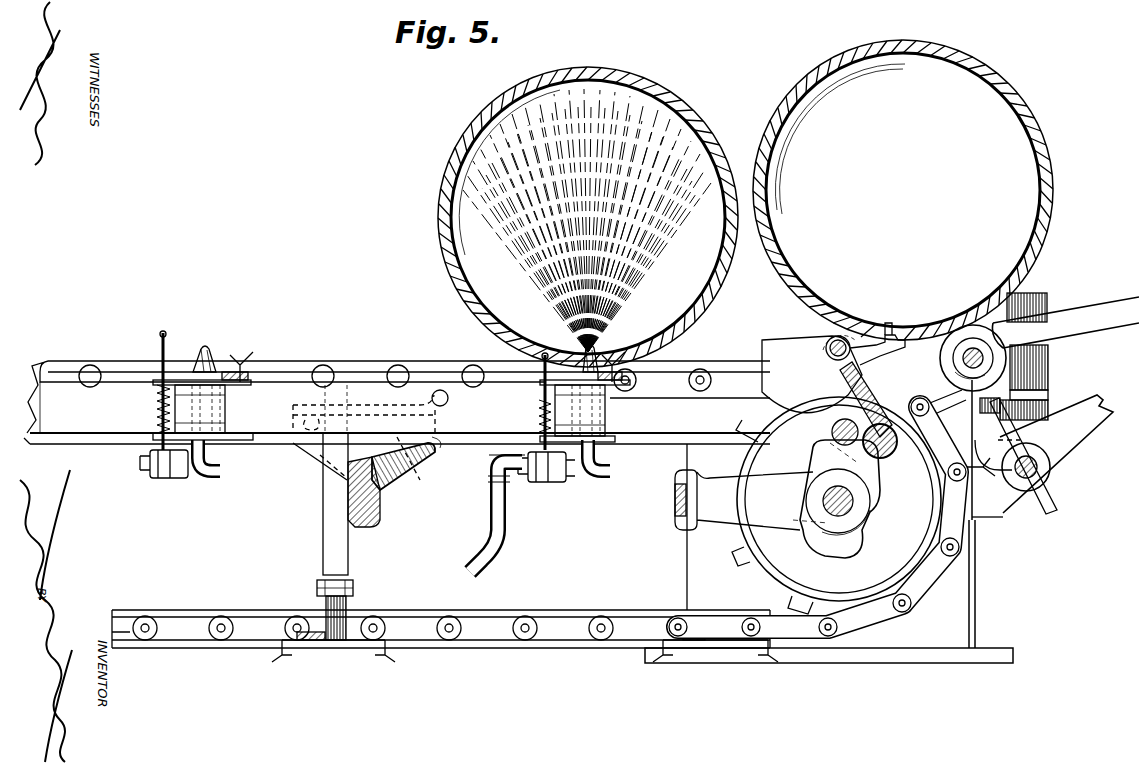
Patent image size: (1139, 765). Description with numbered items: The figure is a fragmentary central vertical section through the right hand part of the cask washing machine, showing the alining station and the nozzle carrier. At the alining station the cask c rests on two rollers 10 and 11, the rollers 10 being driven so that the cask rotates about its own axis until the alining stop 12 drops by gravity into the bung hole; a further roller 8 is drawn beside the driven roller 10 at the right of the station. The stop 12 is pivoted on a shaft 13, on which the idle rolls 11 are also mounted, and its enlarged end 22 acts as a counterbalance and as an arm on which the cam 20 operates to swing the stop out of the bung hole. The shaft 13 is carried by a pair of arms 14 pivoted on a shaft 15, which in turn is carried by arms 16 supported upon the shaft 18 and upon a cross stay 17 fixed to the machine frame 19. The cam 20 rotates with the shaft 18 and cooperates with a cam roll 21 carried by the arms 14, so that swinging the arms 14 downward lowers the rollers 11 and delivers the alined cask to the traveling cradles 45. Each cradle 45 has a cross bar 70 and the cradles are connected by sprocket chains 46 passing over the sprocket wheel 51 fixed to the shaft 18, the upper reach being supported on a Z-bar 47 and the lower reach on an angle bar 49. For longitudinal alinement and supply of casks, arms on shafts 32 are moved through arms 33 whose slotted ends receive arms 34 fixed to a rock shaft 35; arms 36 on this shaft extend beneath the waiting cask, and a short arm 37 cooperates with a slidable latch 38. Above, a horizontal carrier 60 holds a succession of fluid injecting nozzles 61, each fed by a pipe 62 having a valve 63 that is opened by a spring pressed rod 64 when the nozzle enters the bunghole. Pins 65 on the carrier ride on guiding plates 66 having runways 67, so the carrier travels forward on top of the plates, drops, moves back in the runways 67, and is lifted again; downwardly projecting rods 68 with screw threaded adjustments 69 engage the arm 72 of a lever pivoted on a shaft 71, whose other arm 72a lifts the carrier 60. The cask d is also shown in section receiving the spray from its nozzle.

The roller 8 is at (973, 325).
The rollers 10 is at (1010, 348).
The rollers 11 is at (826, 337).
The alining stop 12 is at (895, 330).
The shaft 13 is at (842, 338).
The arms 14 is at (875, 390).
The shaft 15 is at (893, 455).
The arms 16 is at (722, 480).
The cross stay 17 is at (674, 508).
The shaft 18 is at (855, 510).
The machine frame 19 is at (685, 543).
The cam 20 is at (806, 548).
The cam roll 21 is at (831, 434).
The enlarged end or arm 22 is at (760, 346).
The shafts 32 is at (1025, 298).
The arms 33 is at (1048, 397).
The arms 34 is at (990, 418).
The shaft 35 is at (1050, 474).
The arms 36 is at (1098, 425).
The short arm 37 is at (1050, 512).
The latch 38 is at (1015, 507).
The traveling cradles 45 is at (246, 356).
The sprocket chains 46 is at (560, 640).
The Z-bar 47 is at (40, 380).
The angle bar 49 is at (192, 612).
The sprocket wheel 51 is at (740, 545).
The carrier 60 is at (97, 446).
The fluid injecting nozzles 61 is at (204, 345).
The pipe or conduit 62 is at (506, 540).
The valve 63 is at (170, 478).
The spring pressed rod 64 is at (163, 348).
The pins 65 is at (440, 390).
The supporting and guiding plates 66 is at (318, 450).
The trackways or runways 67 is at (415, 474).
The downwardly projecting rods 68 is at (322, 505).
The screw threaded adjustments 69 is at (350, 600).
The cross bar 70 is at (234, 372).
The shaft 71 is at (385, 482).
The lever arm 72 is at (372, 527).
The lever arm 72a is at (440, 448).
The cask at alining station c is at (1018, 100).
The drum d is at (672, 110).